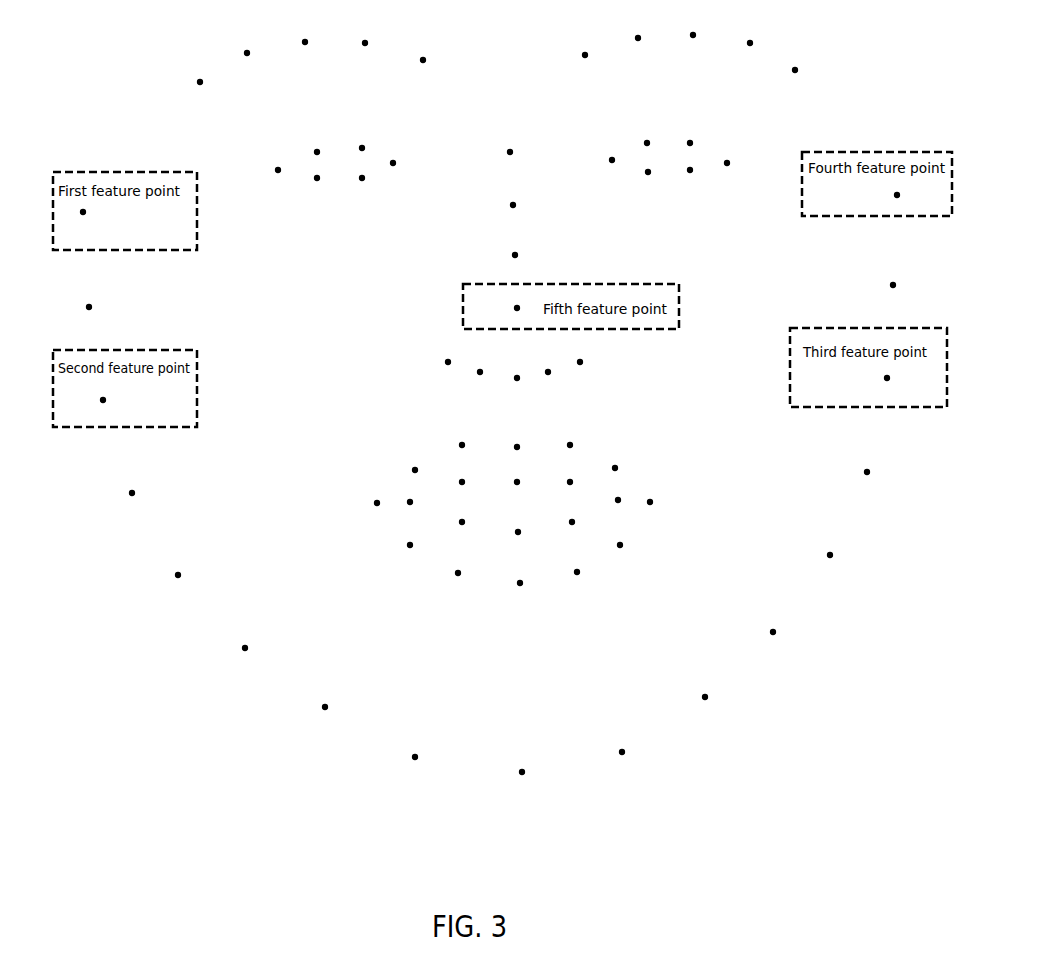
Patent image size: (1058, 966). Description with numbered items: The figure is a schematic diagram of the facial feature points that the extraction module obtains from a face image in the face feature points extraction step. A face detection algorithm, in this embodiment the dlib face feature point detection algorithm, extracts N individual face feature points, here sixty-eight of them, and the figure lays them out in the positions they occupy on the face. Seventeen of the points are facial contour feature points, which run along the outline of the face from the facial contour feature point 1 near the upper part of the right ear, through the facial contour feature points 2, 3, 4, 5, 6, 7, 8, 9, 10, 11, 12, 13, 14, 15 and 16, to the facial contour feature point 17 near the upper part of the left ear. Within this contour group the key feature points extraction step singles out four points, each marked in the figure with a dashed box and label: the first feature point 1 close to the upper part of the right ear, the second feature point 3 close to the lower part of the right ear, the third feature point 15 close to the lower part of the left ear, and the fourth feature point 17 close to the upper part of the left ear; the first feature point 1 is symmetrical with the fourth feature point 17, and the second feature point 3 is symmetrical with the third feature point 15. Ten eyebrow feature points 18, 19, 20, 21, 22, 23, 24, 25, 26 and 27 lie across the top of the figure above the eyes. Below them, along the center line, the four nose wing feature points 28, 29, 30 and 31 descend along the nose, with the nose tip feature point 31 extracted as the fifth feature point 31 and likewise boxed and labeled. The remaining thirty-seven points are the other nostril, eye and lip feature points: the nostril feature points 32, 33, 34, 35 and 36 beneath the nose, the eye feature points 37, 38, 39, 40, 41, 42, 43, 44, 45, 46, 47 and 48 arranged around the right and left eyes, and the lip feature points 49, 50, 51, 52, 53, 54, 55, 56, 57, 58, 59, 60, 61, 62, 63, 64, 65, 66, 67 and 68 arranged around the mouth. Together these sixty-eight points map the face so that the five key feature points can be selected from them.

The first feature point 1 is at (78, 212).
The face feature point 2 is at (81, 304).
The second feature point 3 is at (98, 402).
The face feature point 4 is at (121, 497).
The face feature point 5 is at (170, 580).
The face feature point 6 is at (235, 655).
The face feature point 7 is at (317, 721).
The face feature point 8 is at (410, 774).
The face feature point 9 is at (524, 791).
The face feature point 10 is at (627, 770).
The face feature point 11 is at (720, 714).
The face feature point 12 is at (785, 651).
The face feature point 13 is at (845, 573).
The face feature point 14 is at (884, 479).
The third feature point 15 is at (905, 385).
The face feature point 16 is at (913, 285).
The fourth feature point 17 is at (917, 199).
The face feature point 18 is at (186, 97).
The face feature point 19 is at (249, 72).
The face feature point 20 is at (310, 58).
The face feature point 21 is at (372, 60).
The face feature point 22 is at (425, 78).
The face feature point 23 is at (575, 73).
The face feature point 24 is at (639, 54).
The face feature point 25 is at (699, 53).
The face feature point 26 is at (762, 62).
The face feature point 27 is at (812, 91).
The face feature point 28 is at (495, 154).
The face feature point 29 is at (497, 210).
The face feature point 30 is at (496, 259).
The fifth feature point 31 is at (498, 315).
The face feature point 32 is at (438, 379).
The face feature point 33 is at (468, 392).
The face feature point 34 is at (505, 395).
The face feature point 35 is at (544, 392).
The face feature point 36 is at (584, 382).
The face feature point 37 is at (264, 169).
The face feature point 38 is at (314, 135).
The face feature point 39 is at (350, 133).
The face feature point 40 is at (397, 155).
The face feature point 41 is at (364, 195).
The face feature point 42 is at (309, 195).
The face feature point 43 is at (601, 154).
The face feature point 44 is at (637, 128).
The face feature point 45 is at (684, 127).
The face feature point 46 is at (735, 149).
The face feature point 47 is at (701, 186).
The face feature point 48 is at (642, 187).
The face feature point 49 is at (365, 488).
The face feature point 50 is at (415, 459).
The face feature point 51 is at (469, 435).
The face feature point 52 is at (515, 435).
The face feature point 53 is at (569, 435).
The face feature point 54 is at (622, 457).
The face feature point 55 is at (657, 487).
The face feature point 56 is at (615, 532).
The face feature point 57 is at (574, 560).
The face feature point 58 is at (522, 575).
The face feature point 59 is at (457, 561).
The face feature point 60 is at (405, 532).
The face feature point 61 is at (405, 487).
The face feature point 62 is at (452, 472).
The face feature point 63 is at (515, 472).
The face feature point 64 is at (569, 472).
The face feature point 65 is at (617, 486).
The face feature point 66 is at (570, 510).
The face feature point 67 is at (517, 525).
The face feature point 68 is at (457, 510).